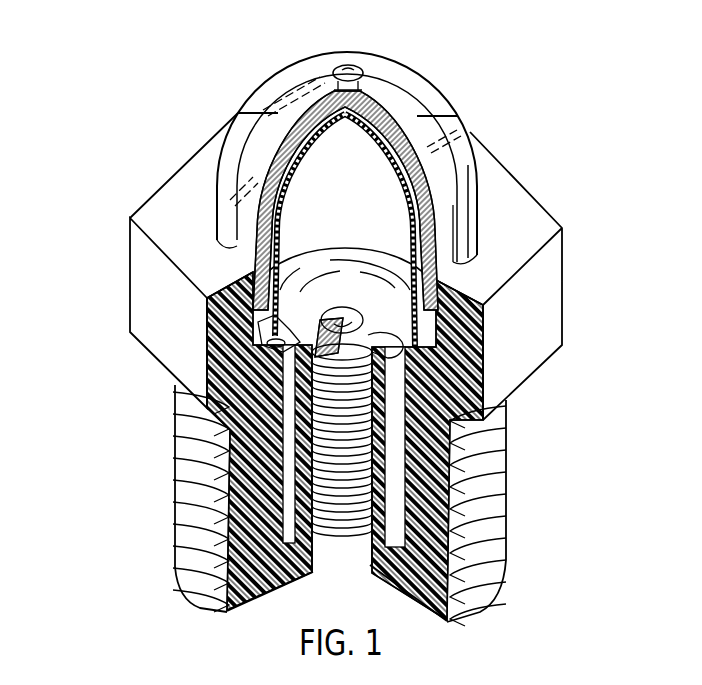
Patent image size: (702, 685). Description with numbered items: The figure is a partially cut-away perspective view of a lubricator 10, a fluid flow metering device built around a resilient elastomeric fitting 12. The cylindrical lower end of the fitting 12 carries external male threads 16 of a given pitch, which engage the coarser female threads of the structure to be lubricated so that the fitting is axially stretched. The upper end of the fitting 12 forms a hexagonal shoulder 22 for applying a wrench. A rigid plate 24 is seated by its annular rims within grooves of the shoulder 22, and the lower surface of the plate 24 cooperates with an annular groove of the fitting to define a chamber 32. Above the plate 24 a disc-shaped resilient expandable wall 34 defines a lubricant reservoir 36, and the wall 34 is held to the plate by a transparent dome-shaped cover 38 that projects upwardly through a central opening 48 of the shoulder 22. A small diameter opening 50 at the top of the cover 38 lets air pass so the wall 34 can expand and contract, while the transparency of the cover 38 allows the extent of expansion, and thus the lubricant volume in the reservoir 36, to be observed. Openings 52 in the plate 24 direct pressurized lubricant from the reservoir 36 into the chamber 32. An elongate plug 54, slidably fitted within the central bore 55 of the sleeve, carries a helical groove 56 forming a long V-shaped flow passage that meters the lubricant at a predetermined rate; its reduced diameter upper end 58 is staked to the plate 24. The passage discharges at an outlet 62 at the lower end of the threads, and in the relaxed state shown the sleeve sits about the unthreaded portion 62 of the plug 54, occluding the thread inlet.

The lubricator 10 is at (574, 150).
The fitting 12 is at (562, 296).
The external male threads 16 is at (492, 494).
The hexagonal shoulder 22 is at (138, 288).
The rigid plate 24 is at (341, 248).
The chamber 32 is at (410, 418).
The resilient expandable wall 34 is at (330, 134).
The lubricant reservoir 36 is at (334, 206).
The dome-shaped cover 38 is at (278, 80).
The central opening 48 is at (453, 250).
The small diameter opening 50 is at (367, 67).
The openings 52 is at (293, 344).
The elongate plug 54 is at (323, 540).
The central bore 55 is at (374, 566).
The helical groove 56 is at (372, 442).
The reduced diameter upper end 58 is at (327, 308).
The outlet 62 is at (373, 352).